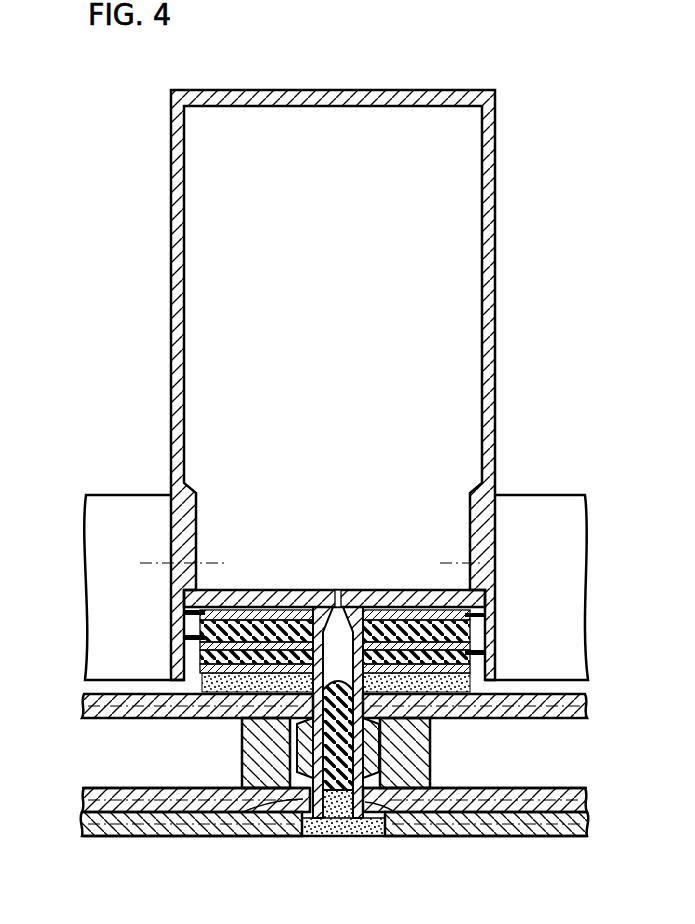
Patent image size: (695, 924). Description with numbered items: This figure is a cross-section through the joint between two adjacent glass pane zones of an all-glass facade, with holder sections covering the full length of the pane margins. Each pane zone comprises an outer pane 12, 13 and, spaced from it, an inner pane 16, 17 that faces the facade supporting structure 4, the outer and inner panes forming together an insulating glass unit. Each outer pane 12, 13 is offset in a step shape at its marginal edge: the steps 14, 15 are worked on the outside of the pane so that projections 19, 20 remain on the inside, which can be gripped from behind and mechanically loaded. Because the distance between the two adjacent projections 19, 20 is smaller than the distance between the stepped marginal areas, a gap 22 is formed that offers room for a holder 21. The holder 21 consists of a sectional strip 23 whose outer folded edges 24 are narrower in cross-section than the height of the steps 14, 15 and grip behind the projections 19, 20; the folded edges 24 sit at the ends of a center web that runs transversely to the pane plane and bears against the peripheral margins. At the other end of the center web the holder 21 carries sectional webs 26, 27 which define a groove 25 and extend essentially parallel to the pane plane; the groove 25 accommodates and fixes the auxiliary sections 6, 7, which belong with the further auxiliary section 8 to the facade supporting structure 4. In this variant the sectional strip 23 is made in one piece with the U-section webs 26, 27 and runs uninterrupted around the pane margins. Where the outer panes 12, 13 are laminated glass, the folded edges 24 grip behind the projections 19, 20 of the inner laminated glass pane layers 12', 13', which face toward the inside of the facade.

The facade supporting structure 4 is at (497, 307).
The auxiliary section 6 is at (180, 536).
The auxiliary section 7 is at (498, 620).
The auxiliary section 8 is at (428, 612).
The outer pane 12 is at (334, 835).
The inner laminated glass pane layer 12' is at (361, 799).
The outer pane 13 is at (331, 868).
The inner laminated glass pane layer 13' is at (335, 842).
The step 14 is at (383, 820).
The step 15 is at (288, 822).
The inner pane 16 is at (568, 708).
The inner pane 17 is at (87, 708).
The projection 19 is at (397, 813).
The projection 20 is at (243, 812).
The holder 21 is at (344, 634).
The gap 22 is at (334, 837).
The sectional strip 23 is at (272, 702).
The folded edge 24 is at (305, 838).
The groove 25 is at (287, 632).
The sectional web 26 is at (498, 597).
The sectional web 27 is at (241, 627).